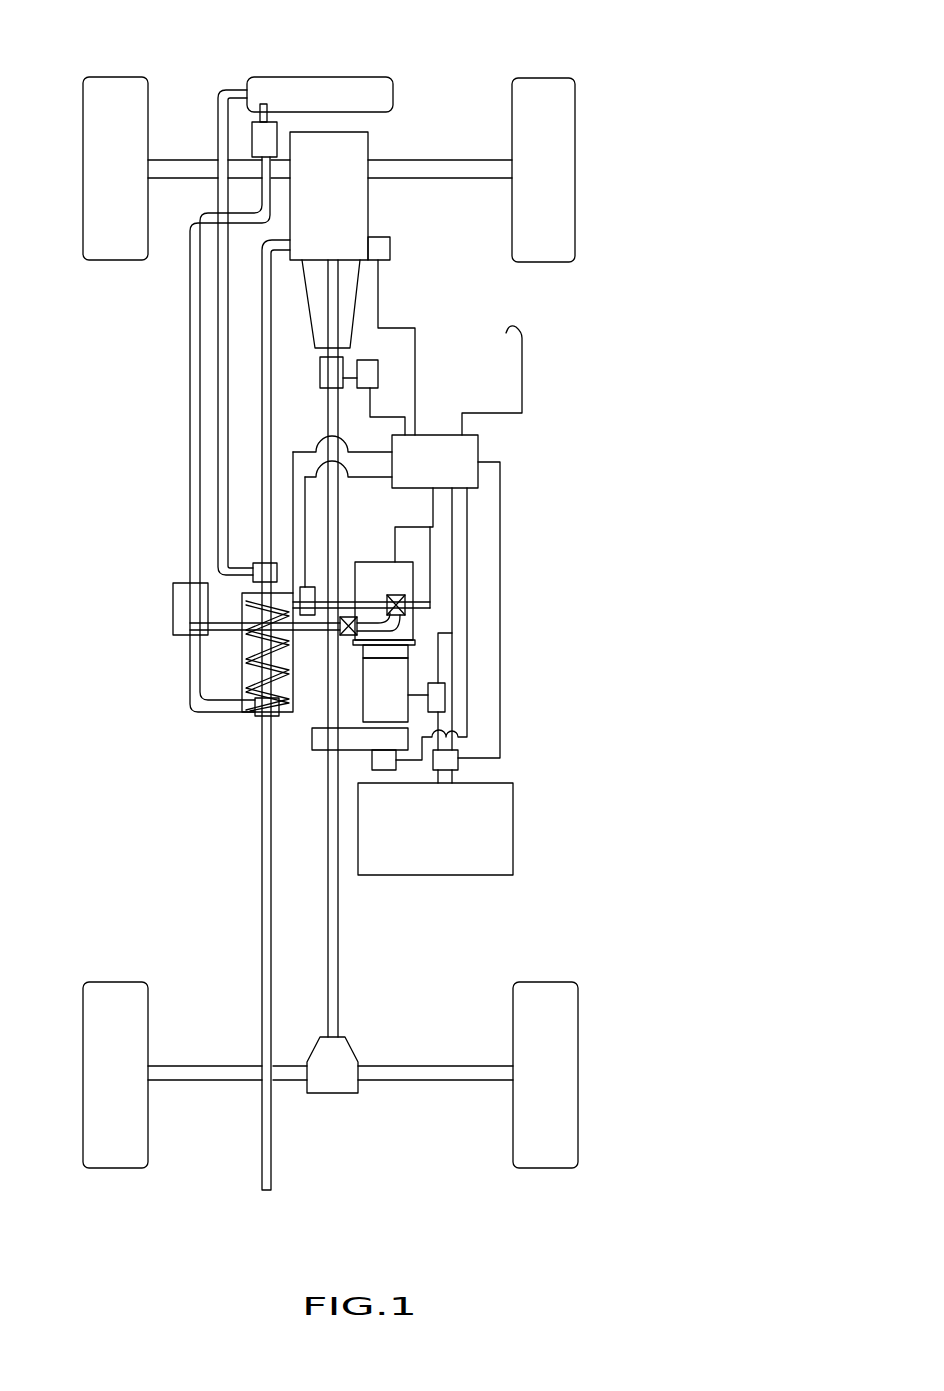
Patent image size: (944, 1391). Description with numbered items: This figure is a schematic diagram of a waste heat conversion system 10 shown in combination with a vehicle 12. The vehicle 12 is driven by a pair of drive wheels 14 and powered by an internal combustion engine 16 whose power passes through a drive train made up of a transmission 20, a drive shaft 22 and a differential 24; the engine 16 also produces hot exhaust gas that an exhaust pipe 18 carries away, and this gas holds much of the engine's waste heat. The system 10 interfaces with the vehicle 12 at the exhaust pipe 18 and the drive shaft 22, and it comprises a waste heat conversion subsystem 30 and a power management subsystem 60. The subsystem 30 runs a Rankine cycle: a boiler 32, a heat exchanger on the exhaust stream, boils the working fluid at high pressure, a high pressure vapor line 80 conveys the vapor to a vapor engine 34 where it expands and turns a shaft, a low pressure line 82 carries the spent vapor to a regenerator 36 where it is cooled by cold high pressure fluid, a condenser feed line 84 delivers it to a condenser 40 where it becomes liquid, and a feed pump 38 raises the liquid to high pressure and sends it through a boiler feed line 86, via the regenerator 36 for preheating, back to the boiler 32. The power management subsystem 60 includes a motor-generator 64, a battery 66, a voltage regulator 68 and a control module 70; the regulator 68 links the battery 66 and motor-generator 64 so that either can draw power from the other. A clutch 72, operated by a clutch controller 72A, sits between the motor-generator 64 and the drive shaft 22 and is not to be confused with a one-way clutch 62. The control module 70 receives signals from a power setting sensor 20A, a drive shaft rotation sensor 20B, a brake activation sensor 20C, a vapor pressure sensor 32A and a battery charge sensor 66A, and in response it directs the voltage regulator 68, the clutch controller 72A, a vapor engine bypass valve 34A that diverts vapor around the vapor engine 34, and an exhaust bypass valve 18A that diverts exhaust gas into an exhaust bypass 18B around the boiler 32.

The waste heat conversion system 10 is at (610, 419).
The vehicle 12 is at (595, 65).
The drive wheels 14 is at (126, 1089).
The internal combustion engine 16 is at (368, 206).
The exhaust pipe 18 is at (262, 428).
The exhaust bypass valve 18A is at (253, 568).
The lower linkage connection 18B is at (230, 722).
The transmission 20 is at (355, 311).
The power setting sensor 20A is at (392, 245).
The drive shaft rotation sensor 20B is at (380, 372).
The brake activation sensor 20C is at (523, 367).
The drive shaft 22 is at (338, 430).
The differential 24 is at (350, 1047).
The waste heat conversion subsystem 30 is at (126, 742).
The boiler 32 is at (242, 662).
The vapor pressure sensor 32A is at (300, 587).
The vapor engine 34 is at (407, 556).
The vapor engine bypass valve 34A is at (392, 593).
The regenerator 36 is at (173, 592).
The feed pump 38 is at (277, 128).
The condenser 40 is at (357, 77).
The power management subsystem 60 is at (655, 730).
The one-way clutch 62 is at (410, 650).
The motor-generator 64 is at (408, 674).
The battery 66 is at (449, 835).
The battery charge sensor 66A is at (447, 762).
The voltage regulator 68 is at (446, 700).
The control module 70 is at (448, 475).
The clutch 72 is at (350, 751).
The clutch controller 72A is at (370, 765).
The high pressure vapor line 80 is at (428, 600).
The low pressure line 82 is at (190, 627).
The condenser feed line 84 is at (218, 117).
The boiler feed line 86 is at (188, 305).